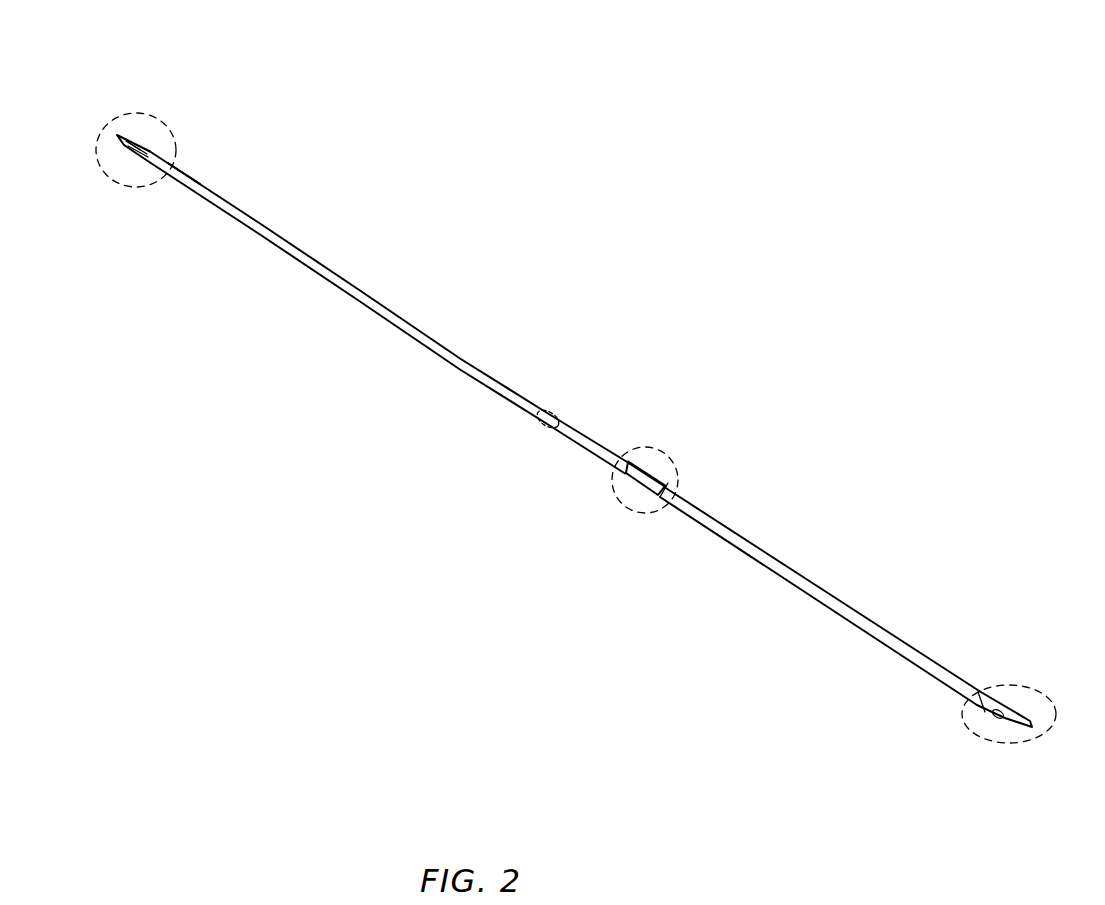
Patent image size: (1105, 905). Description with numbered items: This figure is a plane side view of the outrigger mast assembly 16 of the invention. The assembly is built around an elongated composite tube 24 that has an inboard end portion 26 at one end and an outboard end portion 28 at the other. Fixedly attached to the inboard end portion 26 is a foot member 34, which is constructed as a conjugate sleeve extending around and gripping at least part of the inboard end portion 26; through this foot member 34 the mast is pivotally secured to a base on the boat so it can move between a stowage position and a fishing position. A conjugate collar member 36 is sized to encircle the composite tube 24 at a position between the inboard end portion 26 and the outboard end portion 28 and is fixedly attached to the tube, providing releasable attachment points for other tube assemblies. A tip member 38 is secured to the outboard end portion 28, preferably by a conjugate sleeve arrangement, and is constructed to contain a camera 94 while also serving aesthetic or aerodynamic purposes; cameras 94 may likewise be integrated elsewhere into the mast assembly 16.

The outrigger mast assembly 16 is at (765, 496).
The elongated composite tube 24 is at (433, 340).
The inboard end portion 26 is at (933, 663).
The outboard end portion 28 is at (177, 168).
The foot member 34 is at (1008, 713).
The conjugate collar member 36 is at (627, 462).
The tip member 38 is at (147, 148).
The camera 94 is at (131, 149).